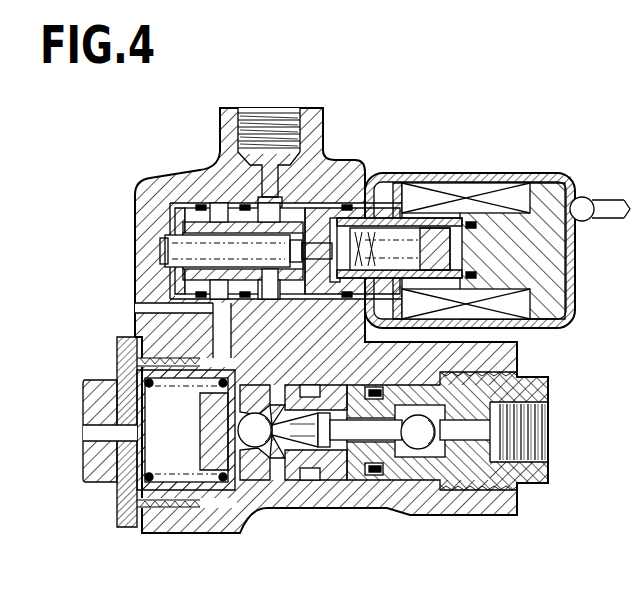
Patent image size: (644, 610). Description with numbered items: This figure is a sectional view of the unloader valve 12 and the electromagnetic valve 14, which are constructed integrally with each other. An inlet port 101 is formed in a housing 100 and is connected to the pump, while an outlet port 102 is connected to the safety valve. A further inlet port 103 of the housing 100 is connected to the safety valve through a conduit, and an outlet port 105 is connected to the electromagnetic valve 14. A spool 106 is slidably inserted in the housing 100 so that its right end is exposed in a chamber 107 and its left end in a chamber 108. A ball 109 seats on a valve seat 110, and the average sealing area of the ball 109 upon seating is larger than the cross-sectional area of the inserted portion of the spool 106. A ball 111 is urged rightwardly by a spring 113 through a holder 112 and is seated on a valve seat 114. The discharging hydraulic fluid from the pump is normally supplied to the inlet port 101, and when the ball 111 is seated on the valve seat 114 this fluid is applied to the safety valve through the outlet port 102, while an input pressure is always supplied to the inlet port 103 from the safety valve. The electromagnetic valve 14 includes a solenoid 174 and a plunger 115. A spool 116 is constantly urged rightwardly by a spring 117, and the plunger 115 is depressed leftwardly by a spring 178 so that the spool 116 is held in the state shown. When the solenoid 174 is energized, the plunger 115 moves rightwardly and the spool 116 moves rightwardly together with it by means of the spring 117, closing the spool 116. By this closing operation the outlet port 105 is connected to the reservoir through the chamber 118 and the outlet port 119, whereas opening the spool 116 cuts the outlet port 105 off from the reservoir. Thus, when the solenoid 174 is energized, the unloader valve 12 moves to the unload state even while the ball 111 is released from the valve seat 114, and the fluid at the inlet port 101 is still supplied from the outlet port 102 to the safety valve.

The unloader valve 12 is at (557, 470).
The electromagnetic valve 14 is at (178, 172).
The housing 100 is at (493, 505).
The inlet port 101 is at (328, 480).
The outlet port 102 is at (307, 478).
The inlet port 103 is at (522, 432).
The outlet port 105 is at (210, 325).
The spool 106 is at (360, 440).
The chamber 107 is at (418, 455).
The chamber 108 is at (288, 490).
The ball 109 is at (432, 412).
The valve seat 110 is at (388, 405).
The ball 111 is at (251, 418).
The holder 112 is at (208, 410).
The spring 113 is at (160, 432).
The valve seat 114 is at (262, 458).
The plunger 115 is at (322, 217).
The spool 116 is at (182, 228).
The spring 117 is at (165, 246).
The chamber 118 is at (226, 284).
The outlet port 119 is at (277, 125).
The solenoid 174 is at (497, 198).
The spring 178 is at (408, 245).